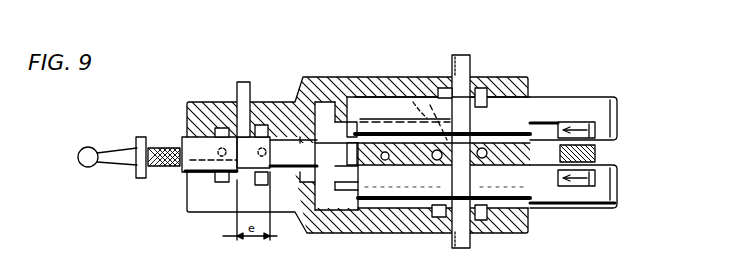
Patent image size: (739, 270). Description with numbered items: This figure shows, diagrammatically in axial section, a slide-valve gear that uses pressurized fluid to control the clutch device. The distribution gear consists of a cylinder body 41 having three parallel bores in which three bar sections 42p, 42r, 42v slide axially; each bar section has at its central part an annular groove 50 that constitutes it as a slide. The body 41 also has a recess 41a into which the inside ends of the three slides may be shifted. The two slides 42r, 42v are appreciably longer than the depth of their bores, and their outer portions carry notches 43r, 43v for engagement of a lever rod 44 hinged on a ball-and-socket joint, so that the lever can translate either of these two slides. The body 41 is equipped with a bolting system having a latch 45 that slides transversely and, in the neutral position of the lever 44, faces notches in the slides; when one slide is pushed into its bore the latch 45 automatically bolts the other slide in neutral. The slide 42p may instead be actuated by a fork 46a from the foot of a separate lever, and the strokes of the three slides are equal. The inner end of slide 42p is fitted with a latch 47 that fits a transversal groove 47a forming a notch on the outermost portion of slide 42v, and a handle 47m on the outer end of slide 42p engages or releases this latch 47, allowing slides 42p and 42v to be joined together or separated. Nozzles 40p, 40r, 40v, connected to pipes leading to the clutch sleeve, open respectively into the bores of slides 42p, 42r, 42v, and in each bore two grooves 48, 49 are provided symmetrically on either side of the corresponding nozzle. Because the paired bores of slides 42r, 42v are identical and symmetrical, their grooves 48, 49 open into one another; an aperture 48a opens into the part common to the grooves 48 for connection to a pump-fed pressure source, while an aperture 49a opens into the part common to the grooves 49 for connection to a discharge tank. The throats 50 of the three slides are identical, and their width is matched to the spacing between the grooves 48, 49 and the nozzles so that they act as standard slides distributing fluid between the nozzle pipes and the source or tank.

The nozzle 40p is at (244, 102).
The nozzle 40v is at (460, 58).
The nozzle 40r is at (460, 246).
The cylinder body 41 is at (352, 124).
The recess 41a is at (325, 120).
The bar section (slide) 42p is at (196, 142).
The bar section (slide) 42v is at (570, 108).
The bar section (slide) 42r is at (543, 190).
The notch 43v is at (617, 116).
The notch 43r is at (596, 183).
The lever rod 44 is at (596, 153).
The latch 45 is at (388, 162).
The fork 46a is at (162, 146).
The latch 47 is at (354, 146).
The transversal groove 47a is at (360, 122).
The handle 47m is at (86, 154).
The groove 48 is at (221, 128).
The aperture 48a is at (440, 94).
The groove 49 is at (261, 132).
The aperture 49a is at (263, 165).
The annular groove (throat) 50 is at (469, 116).